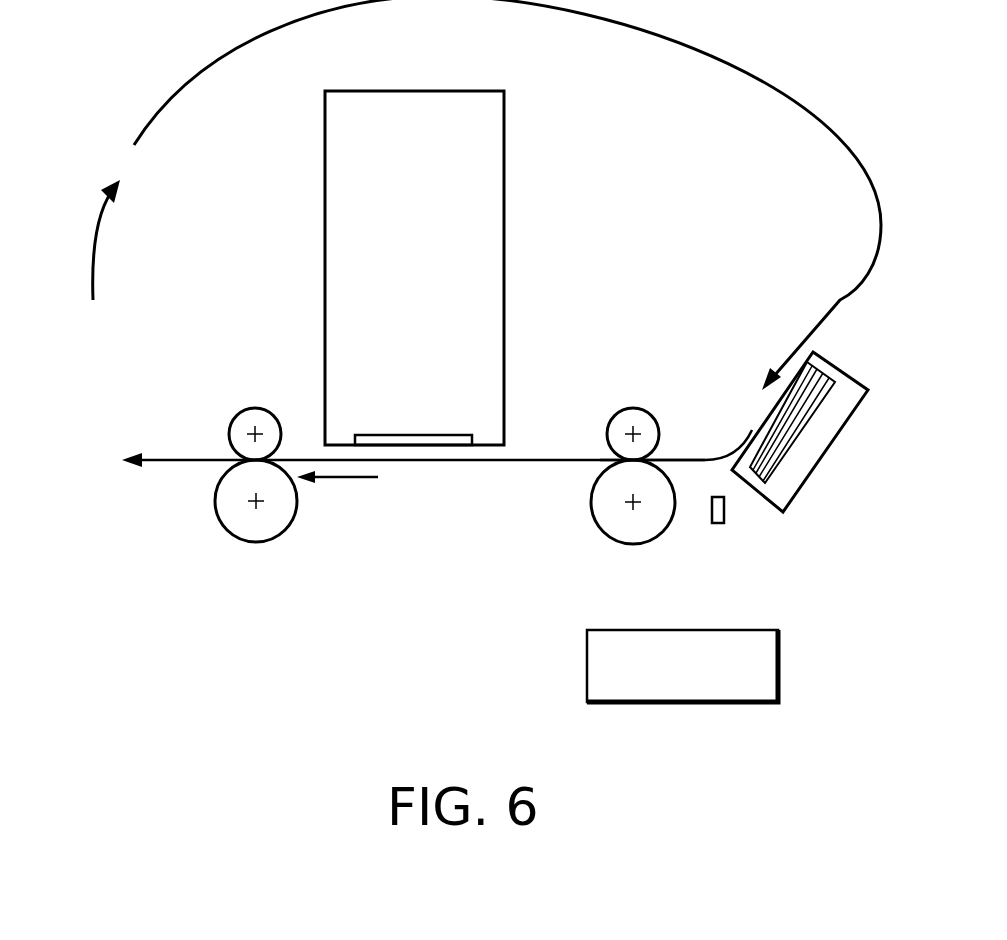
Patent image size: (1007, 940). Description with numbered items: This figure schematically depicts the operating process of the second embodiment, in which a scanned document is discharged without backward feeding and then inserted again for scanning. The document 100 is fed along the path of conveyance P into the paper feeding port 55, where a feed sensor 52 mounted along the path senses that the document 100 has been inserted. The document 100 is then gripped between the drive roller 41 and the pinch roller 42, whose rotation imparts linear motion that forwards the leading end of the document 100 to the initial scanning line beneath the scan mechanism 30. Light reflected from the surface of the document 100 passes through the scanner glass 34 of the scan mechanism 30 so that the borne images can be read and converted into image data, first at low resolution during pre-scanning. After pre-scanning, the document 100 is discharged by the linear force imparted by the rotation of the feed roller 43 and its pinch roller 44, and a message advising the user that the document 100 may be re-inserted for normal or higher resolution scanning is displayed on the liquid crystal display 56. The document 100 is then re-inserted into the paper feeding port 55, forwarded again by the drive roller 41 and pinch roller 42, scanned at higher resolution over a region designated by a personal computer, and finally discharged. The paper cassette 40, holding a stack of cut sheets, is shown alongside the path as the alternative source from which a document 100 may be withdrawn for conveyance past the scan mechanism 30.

The scan mechanism 30 is at (408, 78).
The scanner glass 34 is at (453, 445).
The paper cassette 40 is at (813, 453).
The drive roller 41 is at (620, 544).
The pinch roller 42 is at (635, 408).
The feed roller 43 is at (219, 517).
The pinch roller 44 is at (238, 413).
The feed sensor 52 is at (725, 510).
The paper feeding port 55 is at (676, 438).
The liquid crystal display 56 is at (750, 716).
The document 100 is at (827, 307).
The path of conveyance P is at (347, 480).